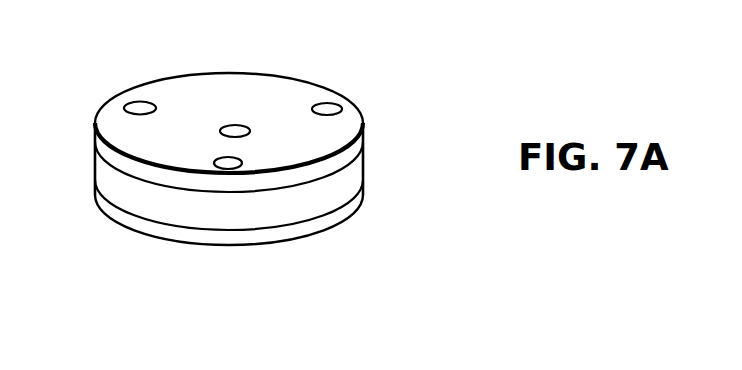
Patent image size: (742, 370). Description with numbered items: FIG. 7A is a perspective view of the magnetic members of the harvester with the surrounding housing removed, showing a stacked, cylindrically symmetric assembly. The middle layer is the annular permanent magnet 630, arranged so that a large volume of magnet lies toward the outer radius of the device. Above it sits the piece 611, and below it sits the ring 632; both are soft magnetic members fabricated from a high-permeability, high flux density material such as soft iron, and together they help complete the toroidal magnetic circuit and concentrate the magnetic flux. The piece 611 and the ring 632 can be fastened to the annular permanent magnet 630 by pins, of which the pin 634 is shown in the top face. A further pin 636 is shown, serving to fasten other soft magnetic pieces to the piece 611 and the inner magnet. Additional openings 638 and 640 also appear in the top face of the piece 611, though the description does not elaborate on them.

The piece 611 is at (350, 154).
The annular permanent magnet 630 is at (350, 182).
The ring 632 is at (268, 236).
The pin 634 is at (139, 107).
The pin 636 is at (233, 129).
The aperture 638 is at (226, 164).
The aperture 640 is at (330, 108).